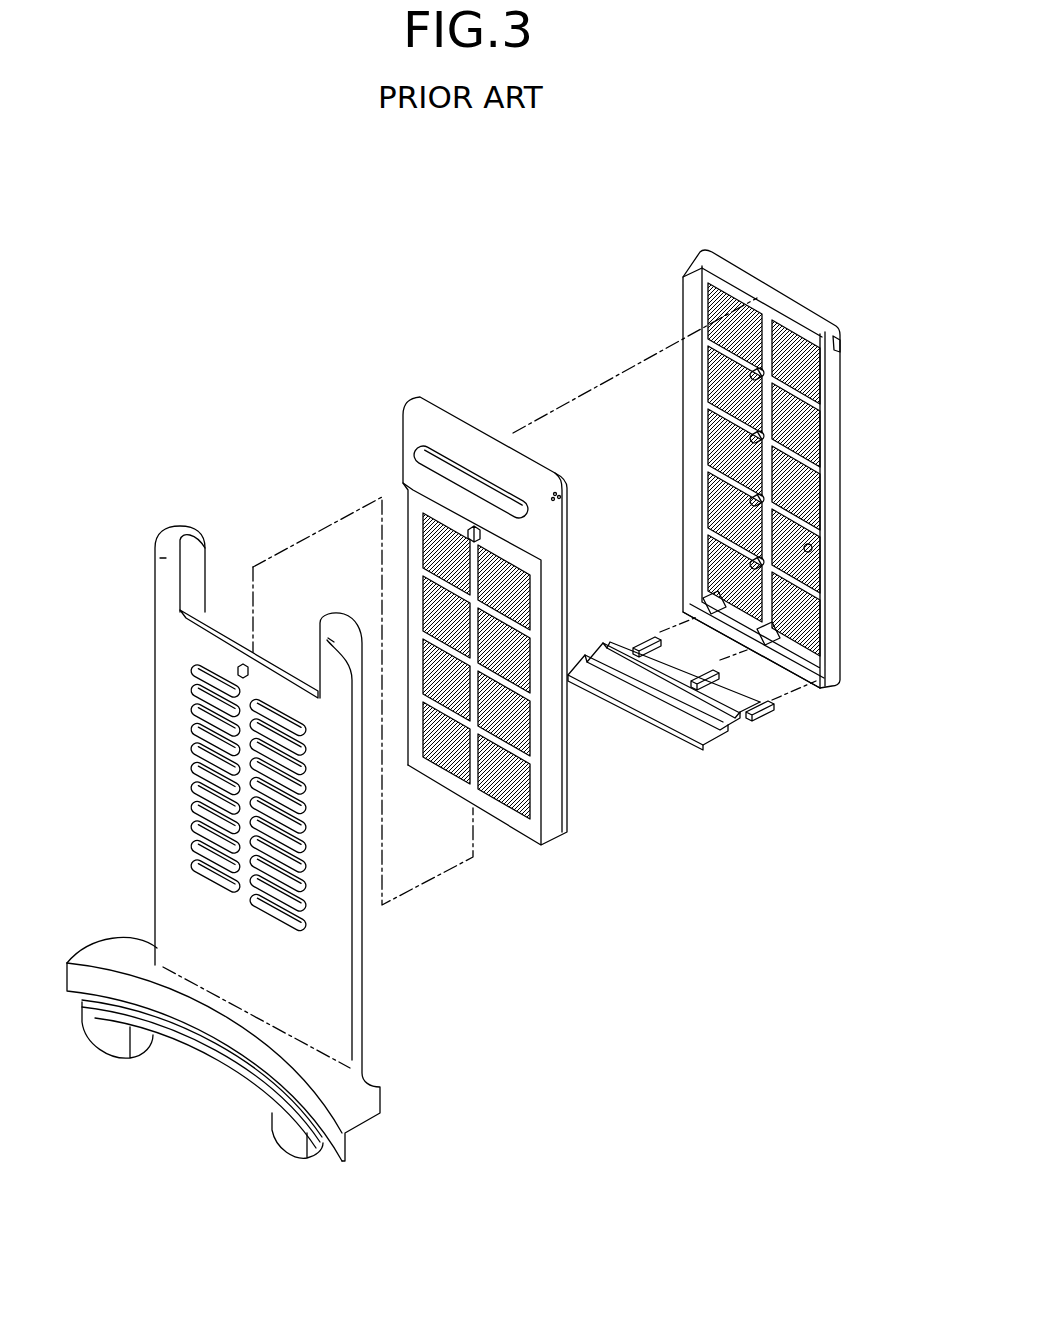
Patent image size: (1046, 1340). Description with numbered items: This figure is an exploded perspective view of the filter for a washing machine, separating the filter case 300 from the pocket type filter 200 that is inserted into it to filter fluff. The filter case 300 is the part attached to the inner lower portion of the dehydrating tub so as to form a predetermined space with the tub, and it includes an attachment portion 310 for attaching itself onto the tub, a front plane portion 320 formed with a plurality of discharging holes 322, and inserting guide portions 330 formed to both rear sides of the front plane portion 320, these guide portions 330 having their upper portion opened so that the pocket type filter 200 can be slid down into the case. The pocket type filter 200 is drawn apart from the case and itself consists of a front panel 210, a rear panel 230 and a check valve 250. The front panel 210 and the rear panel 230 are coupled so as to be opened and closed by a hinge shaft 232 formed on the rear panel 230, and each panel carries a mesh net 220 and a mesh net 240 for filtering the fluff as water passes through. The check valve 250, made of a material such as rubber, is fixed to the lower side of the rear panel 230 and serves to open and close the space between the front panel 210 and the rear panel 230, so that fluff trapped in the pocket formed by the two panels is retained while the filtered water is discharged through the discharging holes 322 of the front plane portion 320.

The pocket type filter 200 is at (502, 280).
The front panel 210 is at (562, 578).
The mesh net 220 is at (523, 793).
The rear panel 230 is at (829, 627).
The hinge shaft 232 is at (841, 352).
The mesh net 240 is at (817, 548).
The check valve 250 is at (684, 722).
The filter case 300 is at (374, 1038).
The attachment portion 310 is at (232, 1013).
The front plane portion 320 is at (160, 885).
The discharging holes 322 is at (205, 774).
The inserting guide portions 330 is at (318, 625).